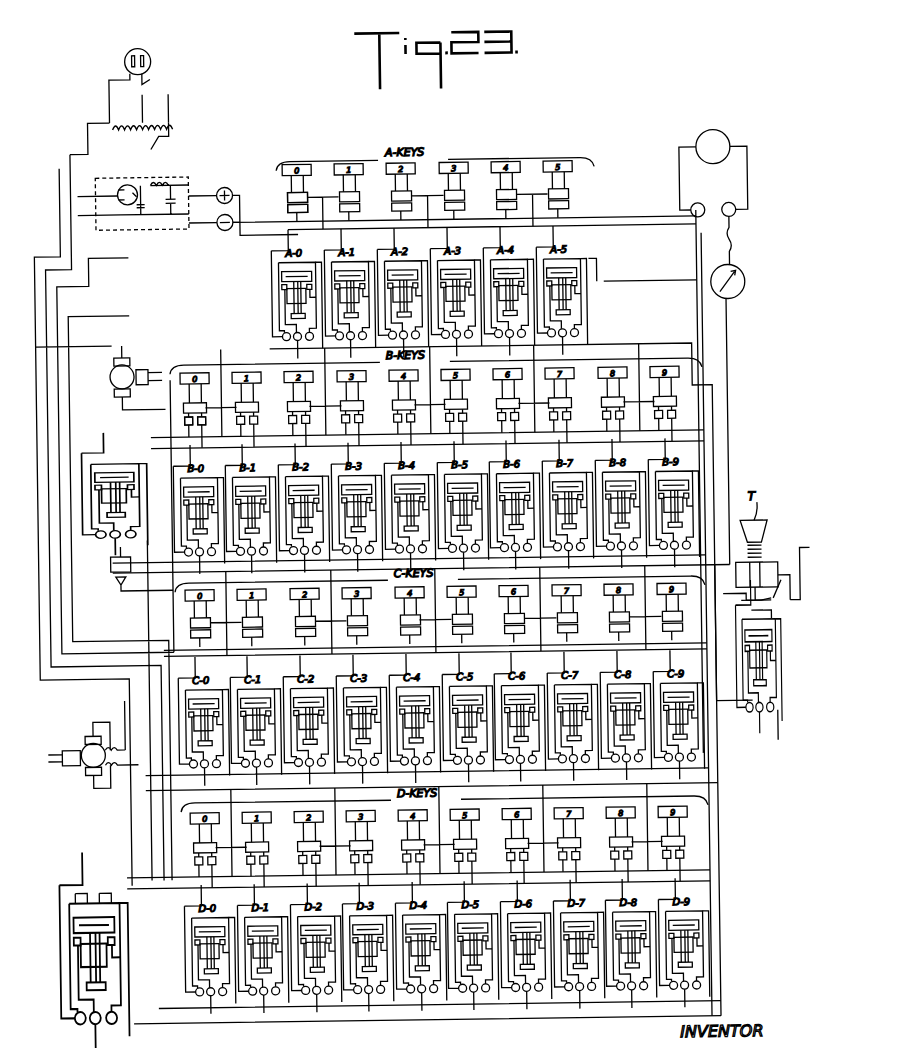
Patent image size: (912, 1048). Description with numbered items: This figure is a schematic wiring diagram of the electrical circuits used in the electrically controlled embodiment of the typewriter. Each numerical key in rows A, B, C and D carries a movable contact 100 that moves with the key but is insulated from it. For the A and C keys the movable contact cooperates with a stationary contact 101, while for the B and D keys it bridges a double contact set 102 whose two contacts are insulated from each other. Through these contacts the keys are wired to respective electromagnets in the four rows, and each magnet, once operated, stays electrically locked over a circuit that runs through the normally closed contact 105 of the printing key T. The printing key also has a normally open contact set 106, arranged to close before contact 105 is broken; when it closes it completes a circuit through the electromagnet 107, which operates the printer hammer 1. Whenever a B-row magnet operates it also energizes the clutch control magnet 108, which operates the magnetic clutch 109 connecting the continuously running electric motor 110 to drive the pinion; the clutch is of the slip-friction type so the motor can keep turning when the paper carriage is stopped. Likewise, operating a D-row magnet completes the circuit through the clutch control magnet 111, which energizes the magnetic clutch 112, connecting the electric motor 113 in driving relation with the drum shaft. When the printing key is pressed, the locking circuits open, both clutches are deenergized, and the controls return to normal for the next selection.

The printer hammer 1 is at (806, 554).
The contact 100 is at (290, 198).
The stationary contact 101 is at (290, 210).
The double contact set 102 is at (186, 425).
The normally closed contact 105 is at (776, 580).
The contact set 106 is at (740, 604).
The electromagnet 107 is at (776, 673).
The clutch control magnet 108 is at (105, 461).
The magnetic clutch 109 is at (146, 367).
The electric motor 110 is at (126, 363).
The clutch control magnet 111 is at (122, 939).
The magnetic clutch 112 is at (70, 769).
The electric motor 113 is at (77, 747).